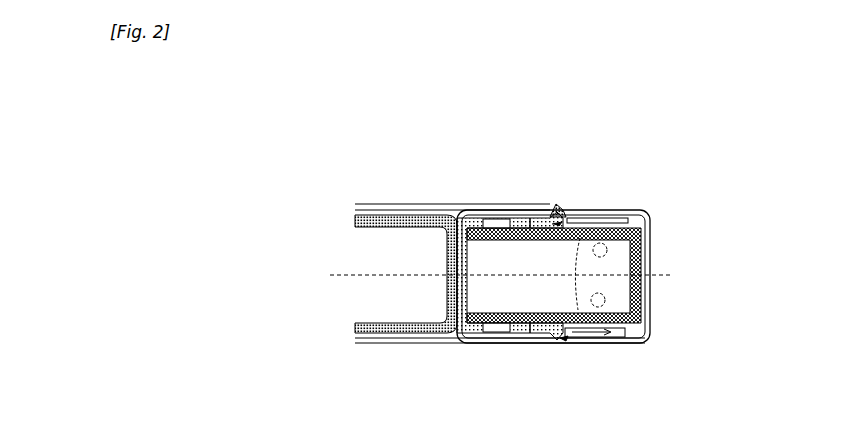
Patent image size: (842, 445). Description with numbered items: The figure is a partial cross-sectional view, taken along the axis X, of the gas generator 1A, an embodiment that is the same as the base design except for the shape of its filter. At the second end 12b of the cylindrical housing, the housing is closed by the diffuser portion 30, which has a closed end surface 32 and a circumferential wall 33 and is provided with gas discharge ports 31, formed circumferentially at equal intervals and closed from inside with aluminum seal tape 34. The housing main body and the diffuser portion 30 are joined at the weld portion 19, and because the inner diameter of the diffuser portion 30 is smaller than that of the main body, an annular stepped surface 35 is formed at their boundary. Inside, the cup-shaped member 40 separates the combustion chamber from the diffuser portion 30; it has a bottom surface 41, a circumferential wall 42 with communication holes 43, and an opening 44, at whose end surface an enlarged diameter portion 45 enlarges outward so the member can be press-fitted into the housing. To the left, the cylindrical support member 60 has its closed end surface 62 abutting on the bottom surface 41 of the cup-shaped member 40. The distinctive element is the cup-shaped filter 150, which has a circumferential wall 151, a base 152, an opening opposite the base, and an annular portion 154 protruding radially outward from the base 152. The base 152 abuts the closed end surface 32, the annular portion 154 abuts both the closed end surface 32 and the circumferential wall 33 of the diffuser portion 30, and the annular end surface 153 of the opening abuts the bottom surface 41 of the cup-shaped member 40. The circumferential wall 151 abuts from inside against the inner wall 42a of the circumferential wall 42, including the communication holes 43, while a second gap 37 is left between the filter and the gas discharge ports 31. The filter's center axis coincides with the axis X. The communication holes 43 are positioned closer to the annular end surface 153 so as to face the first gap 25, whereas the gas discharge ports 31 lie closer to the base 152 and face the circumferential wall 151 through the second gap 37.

The gas generator 1A is at (482, 148).
The cylindrical support member 60 is at (375, 207).
The closed end surface 62 is at (447, 288).
The cup-shaped member 40 is at (450, 214).
The first gap 25 is at (470, 216).
The communication holes 43 is at (495, 218).
The circumferential wall 42 is at (502, 334).
The inner wall 42a is at (512, 312).
The bottom surface 41 is at (470, 250).
The opening 44 is at (548, 318).
The enlarged diameter portion 45 is at (546, 222).
The cup-shaped filter 150 is at (556, 213).
The weld portion 19 is at (565, 215).
The gas discharge ports 31 is at (600, 217).
The second gap 37 is at (630, 211).
The diffuser portion 30 is at (584, 273).
The annular portion 154 is at (648, 219).
The closed end surface 32 is at (634, 250).
The axis X is at (512, 276).
The base 152 is at (647, 290).
The circumferential wall 151 is at (648, 338).
The circumferential wall 33 is at (608, 340).
The second end 12b is at (566, 343).
The annular stepped surface 35 is at (541, 336).
The annular end surface 153 is at (455, 340).
The aluminum seal tape 34 is at (572, 258).